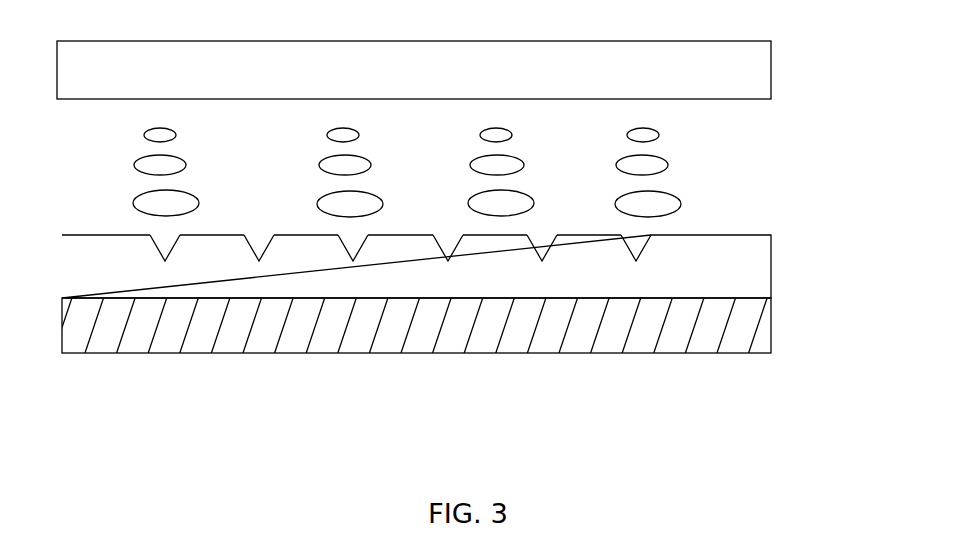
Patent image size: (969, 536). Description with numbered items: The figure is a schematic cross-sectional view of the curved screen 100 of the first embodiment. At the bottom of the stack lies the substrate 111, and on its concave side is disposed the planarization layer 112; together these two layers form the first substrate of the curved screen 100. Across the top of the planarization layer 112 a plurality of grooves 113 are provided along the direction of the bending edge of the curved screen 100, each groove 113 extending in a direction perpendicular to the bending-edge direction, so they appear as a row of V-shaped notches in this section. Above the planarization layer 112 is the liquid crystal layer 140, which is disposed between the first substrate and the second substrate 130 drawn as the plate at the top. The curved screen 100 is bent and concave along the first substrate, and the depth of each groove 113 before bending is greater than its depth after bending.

The curved screen 100 is at (394, 370).
The substrate 111 is at (766, 328).
The planarization layer 112 is at (758, 268).
The grooves 113 is at (638, 240).
The second substrate 130 is at (750, 73).
The liquid crystal layer 140 is at (668, 165).